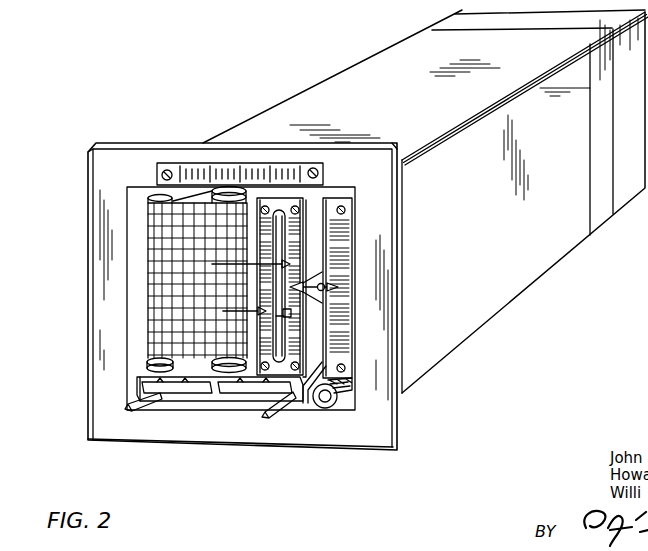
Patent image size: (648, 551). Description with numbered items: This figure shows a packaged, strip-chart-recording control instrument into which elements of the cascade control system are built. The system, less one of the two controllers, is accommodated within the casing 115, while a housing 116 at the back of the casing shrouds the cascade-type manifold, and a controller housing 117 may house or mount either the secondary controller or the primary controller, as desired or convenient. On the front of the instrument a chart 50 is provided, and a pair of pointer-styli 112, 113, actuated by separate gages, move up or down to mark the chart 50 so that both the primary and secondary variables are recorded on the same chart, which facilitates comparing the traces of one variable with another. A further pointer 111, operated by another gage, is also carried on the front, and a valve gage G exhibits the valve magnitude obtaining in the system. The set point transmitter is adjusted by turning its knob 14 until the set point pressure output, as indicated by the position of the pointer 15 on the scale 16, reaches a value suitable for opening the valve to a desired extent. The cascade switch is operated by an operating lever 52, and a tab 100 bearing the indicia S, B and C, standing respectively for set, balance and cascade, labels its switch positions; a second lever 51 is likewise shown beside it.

The knob 14 is at (325, 412).
The pointer 15 is at (300, 286).
The scale 16 is at (357, 226).
The chart 50 is at (205, 279).
The lever 51 is at (260, 416).
The operating lever 52 is at (128, 410).
The tab 100 is at (182, 405).
The pointer 111 is at (288, 312).
The pointer-stylus 112 is at (290, 262).
The pointer-stylus 113 is at (291, 319).
The casing 115 is at (310, 88).
The housing 116 is at (405, 37).
The controller housing 117 is at (455, 16).
The valve gage G is at (195, 165).